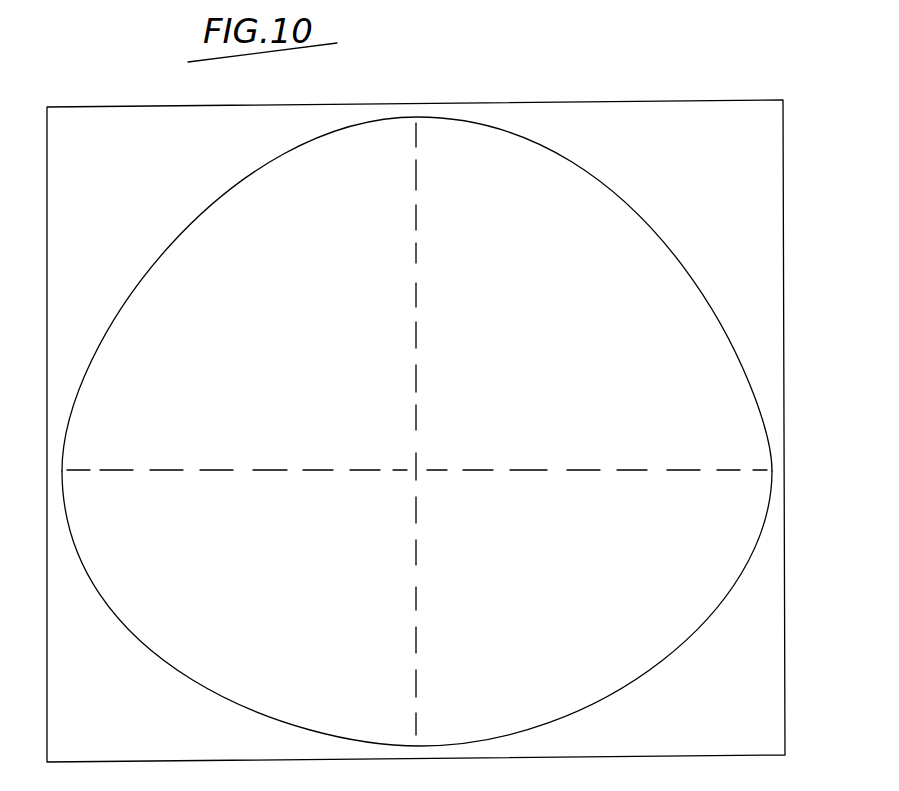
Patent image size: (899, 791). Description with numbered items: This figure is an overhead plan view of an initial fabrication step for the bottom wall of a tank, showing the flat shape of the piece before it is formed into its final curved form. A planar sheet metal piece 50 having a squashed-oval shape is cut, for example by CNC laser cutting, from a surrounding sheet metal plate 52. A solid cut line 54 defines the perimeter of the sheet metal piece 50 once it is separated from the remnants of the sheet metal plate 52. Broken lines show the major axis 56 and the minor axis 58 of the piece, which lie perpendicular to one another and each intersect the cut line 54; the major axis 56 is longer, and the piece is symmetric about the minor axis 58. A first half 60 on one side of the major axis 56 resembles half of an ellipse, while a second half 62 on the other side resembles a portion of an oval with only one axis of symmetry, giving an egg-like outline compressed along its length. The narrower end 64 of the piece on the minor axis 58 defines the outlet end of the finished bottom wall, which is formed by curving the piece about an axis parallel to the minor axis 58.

The planar sheet metal piece 50 is at (461, 431).
The sheet metal plate 52 is at (753, 628).
The cut line 54 is at (417, 431).
The major axis 56 is at (683, 468).
The minor axis 58 is at (418, 292).
The first half 60 is at (512, 567).
The second half 62 is at (507, 376).
The narrower end 64 is at (416, 115).